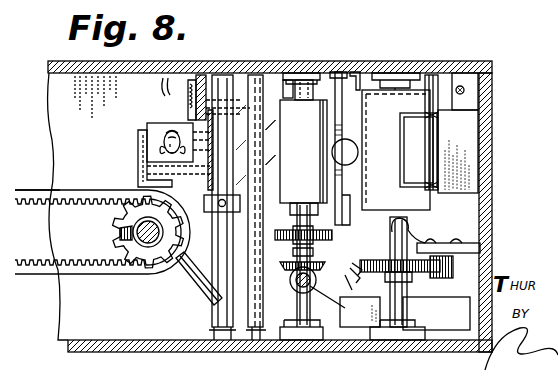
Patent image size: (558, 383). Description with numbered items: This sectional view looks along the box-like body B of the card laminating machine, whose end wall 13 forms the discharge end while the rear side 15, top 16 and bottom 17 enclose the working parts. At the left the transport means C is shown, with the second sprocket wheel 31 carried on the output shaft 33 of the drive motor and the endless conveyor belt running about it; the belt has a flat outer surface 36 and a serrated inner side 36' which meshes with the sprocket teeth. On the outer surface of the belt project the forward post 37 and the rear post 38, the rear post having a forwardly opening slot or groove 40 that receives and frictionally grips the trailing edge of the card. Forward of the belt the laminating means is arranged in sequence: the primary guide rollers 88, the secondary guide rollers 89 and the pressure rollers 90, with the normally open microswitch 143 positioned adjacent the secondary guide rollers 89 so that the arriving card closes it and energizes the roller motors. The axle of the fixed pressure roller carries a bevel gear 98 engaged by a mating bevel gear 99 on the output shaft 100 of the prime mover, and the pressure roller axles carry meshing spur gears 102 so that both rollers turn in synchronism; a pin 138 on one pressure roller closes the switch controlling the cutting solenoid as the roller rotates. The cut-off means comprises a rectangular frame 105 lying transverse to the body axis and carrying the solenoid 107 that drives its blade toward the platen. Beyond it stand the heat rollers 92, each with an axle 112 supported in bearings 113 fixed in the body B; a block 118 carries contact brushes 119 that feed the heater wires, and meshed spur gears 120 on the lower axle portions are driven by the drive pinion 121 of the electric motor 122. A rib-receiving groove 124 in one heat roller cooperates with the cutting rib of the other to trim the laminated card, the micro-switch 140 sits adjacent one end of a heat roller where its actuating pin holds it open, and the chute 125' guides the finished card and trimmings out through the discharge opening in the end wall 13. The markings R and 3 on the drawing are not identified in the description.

The discharge end wall 13 is at (492, 143).
The rear side 15 is at (73, 316).
The top 16 is at (163, 70).
The bottom 17 is at (118, 352).
The second sprocket wheel 31 is at (122, 226).
The output shaft 33 is at (134, 238).
The flat outer surface 36 is at (102, 220).
The serrated inner side 36' is at (43, 211).
The forward post 37 is at (183, 276).
The rear post 38 is at (140, 150).
The longitudinal slot or groove 40 is at (167, 113).
The primary guide rollers 88 is at (218, 332).
The secondary guide rollers 89 is at (258, 332).
The pressure rollers 90 is at (318, 152).
The heat rollers 92 is at (397, 108).
The bevel gear 98 is at (331, 257).
The mating bevel gear 99 is at (292, 282).
The output shaft 100 is at (332, 312).
The spur gears 102 is at (332, 236).
The rectangular frame 105 is at (357, 73).
The solenoid 107 is at (352, 155).
The axle 112 is at (400, 332).
The bearings 113 is at (398, 82).
The block 118 is at (470, 251).
The contact brushes 119 is at (410, 235).
The meshed spur gears 120 is at (384, 262).
The drive pinion 121 is at (450, 270).
The electric motor 122 is at (450, 314).
The rib-receiving groove 124 is at (438, 116).
The chute 125' is at (487, 149).
The pin 138 is at (292, 73).
The micro-switch 140 is at (466, 80).
The microswitch 143 is at (238, 78).
The box-like body B is at (494, 60).
The transport means C is at (112, 190).
The reference R is at (213, 160).
The item 3 is at (455, 243).